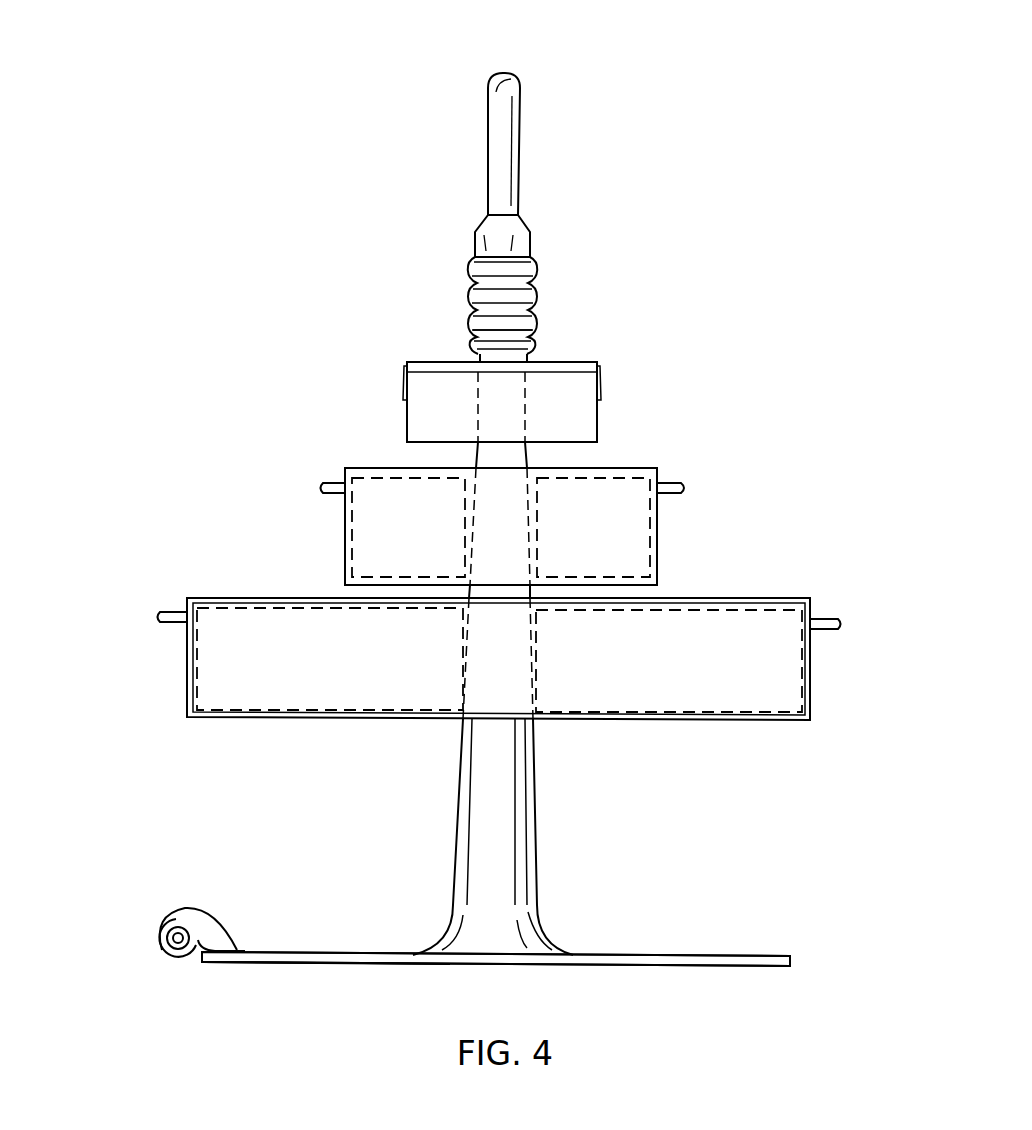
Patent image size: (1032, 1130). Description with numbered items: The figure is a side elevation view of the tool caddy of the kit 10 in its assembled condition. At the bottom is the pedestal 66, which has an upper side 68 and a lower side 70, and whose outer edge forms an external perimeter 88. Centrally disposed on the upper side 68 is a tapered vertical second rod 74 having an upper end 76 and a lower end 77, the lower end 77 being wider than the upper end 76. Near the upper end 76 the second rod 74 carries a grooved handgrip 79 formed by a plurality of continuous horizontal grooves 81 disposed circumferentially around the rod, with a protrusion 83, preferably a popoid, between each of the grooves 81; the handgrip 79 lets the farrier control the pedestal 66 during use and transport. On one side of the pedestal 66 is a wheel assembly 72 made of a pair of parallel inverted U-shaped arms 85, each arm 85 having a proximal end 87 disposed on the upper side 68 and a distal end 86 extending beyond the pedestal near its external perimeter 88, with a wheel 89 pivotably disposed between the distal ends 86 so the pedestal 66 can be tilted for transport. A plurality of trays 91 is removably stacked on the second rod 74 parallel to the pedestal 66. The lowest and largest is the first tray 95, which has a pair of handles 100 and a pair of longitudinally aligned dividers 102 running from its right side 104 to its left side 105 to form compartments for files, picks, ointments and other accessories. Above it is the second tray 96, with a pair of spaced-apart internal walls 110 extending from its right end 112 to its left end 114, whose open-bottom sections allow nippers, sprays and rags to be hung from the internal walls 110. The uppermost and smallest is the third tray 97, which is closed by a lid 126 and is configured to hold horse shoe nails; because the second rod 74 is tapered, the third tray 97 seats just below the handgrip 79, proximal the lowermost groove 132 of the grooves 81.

The kit 10 is at (650, 106).
The pedestal 66 is at (790, 959).
The upper side 68 is at (745, 955).
The lower side 70 is at (748, 967).
The wheel assemblies 72 is at (198, 898).
The second rod 74 is at (540, 781).
The upper end 76 is at (521, 74).
The lower end 77 is at (542, 933).
The grooved handgrip 79 is at (537, 284).
The grooves 81 is at (510, 339).
The protrusion 83 is at (530, 356).
The inverted U-shaped arms 85 is at (213, 910).
The distal end 86 is at (179, 953).
The proximal end 87 is at (237, 949).
The external perimeter 88 is at (323, 964).
The wheel 89 is at (163, 941).
The trays 91 is at (602, 432).
The first tray 95 is at (780, 597).
The second tray 96 is at (345, 473).
The third tray 97 is at (408, 426).
The handles 100 is at (158, 618).
The dividers 102 is at (232, 608).
The right side 104 is at (811, 681).
The left side 105 is at (187, 673).
The internal walls 110 is at (370, 476).
The right end 112 is at (657, 548).
The left end 114 is at (345, 539).
The lid 126 is at (600, 363).
The lowermost groove 132 is at (470, 359).